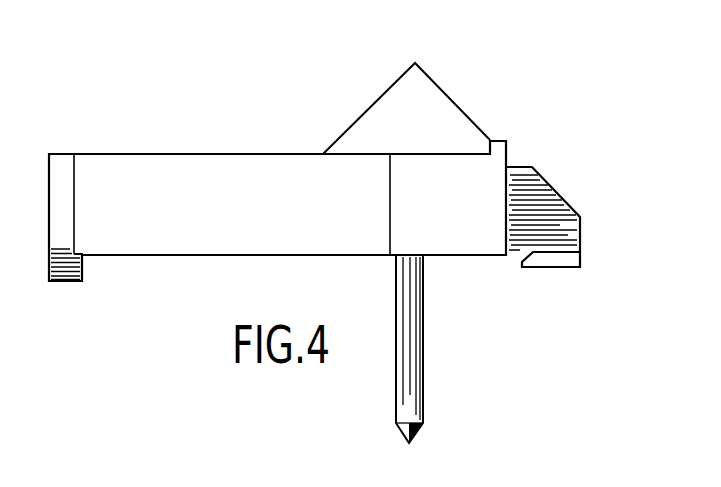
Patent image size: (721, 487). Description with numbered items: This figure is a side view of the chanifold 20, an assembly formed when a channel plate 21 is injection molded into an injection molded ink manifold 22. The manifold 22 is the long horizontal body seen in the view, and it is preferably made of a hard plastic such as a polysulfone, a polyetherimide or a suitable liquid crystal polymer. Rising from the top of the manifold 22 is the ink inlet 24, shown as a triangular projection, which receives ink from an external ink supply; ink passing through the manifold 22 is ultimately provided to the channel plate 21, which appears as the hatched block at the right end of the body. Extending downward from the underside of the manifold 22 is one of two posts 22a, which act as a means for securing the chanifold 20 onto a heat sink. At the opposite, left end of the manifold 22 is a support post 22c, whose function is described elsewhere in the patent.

The chanifold 20 is at (289, 105).
The channel plate 21 is at (580, 262).
The ink manifold 22 is at (121, 162).
The post 22a is at (424, 378).
The support post 22c is at (82, 281).
The ink inlet 24 is at (384, 77).